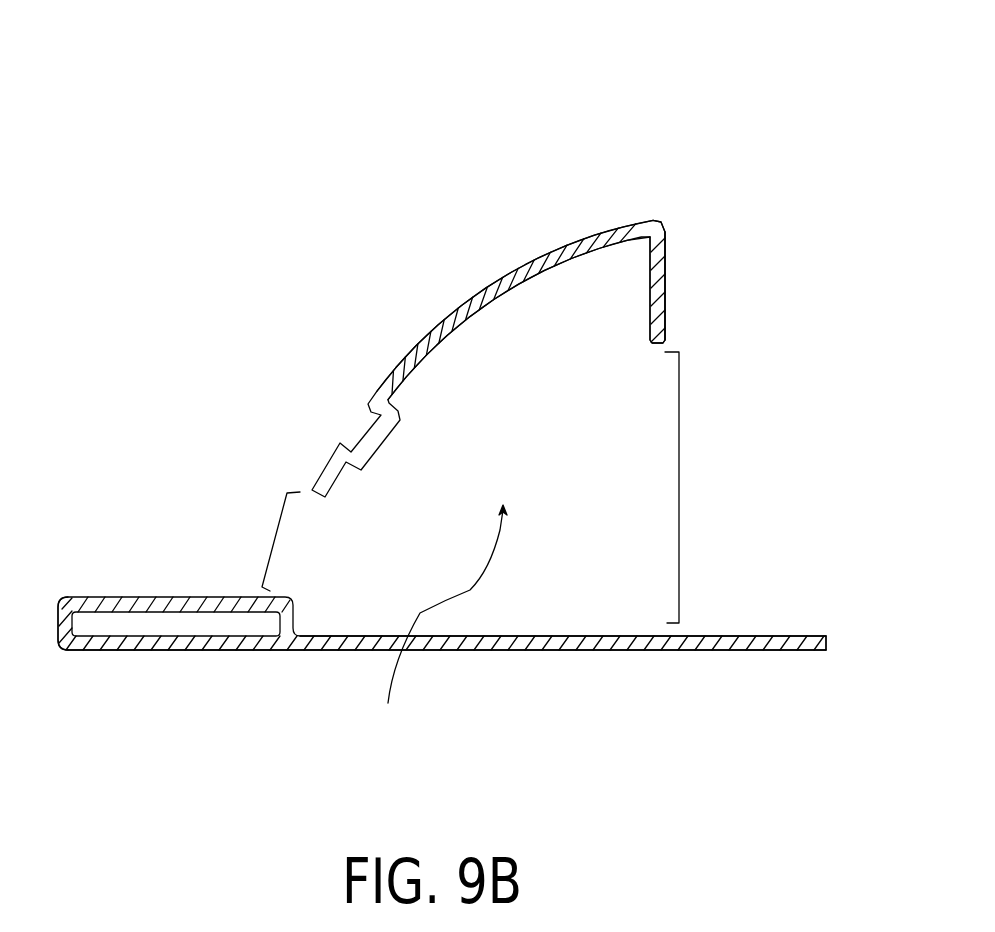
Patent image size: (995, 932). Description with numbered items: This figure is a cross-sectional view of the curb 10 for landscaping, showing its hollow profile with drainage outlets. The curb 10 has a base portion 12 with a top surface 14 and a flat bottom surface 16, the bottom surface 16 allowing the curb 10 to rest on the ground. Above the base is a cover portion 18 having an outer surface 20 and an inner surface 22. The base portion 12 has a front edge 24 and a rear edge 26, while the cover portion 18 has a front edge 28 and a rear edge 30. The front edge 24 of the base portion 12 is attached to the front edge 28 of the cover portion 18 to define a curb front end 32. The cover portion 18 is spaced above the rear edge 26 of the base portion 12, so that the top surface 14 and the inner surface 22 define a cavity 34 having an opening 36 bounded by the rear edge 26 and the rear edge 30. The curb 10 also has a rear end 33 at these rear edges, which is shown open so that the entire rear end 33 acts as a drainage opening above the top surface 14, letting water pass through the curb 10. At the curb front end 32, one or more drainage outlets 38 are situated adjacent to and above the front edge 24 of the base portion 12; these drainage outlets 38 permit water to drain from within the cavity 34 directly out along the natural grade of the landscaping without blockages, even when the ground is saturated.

The curb 10 is at (208, 125).
The base portion 12 is at (592, 652).
The top surface 14 is at (734, 635).
The bottom surface 16 is at (698, 652).
The cover portion 18 is at (538, 258).
The outer surface 20 is at (479, 294).
The inner surface 22 is at (513, 286).
The front edge 24 is at (65, 650).
The rear edge 26 is at (820, 652).
The front edge 28 is at (66, 594).
The rear edge 30 is at (660, 218).
The curb front end 32 is at (143, 650).
The rear end 33 is at (666, 290).
The cavity 34 is at (440, 622).
The opening 36 is at (680, 488).
The drainage outlets 38 is at (273, 538).